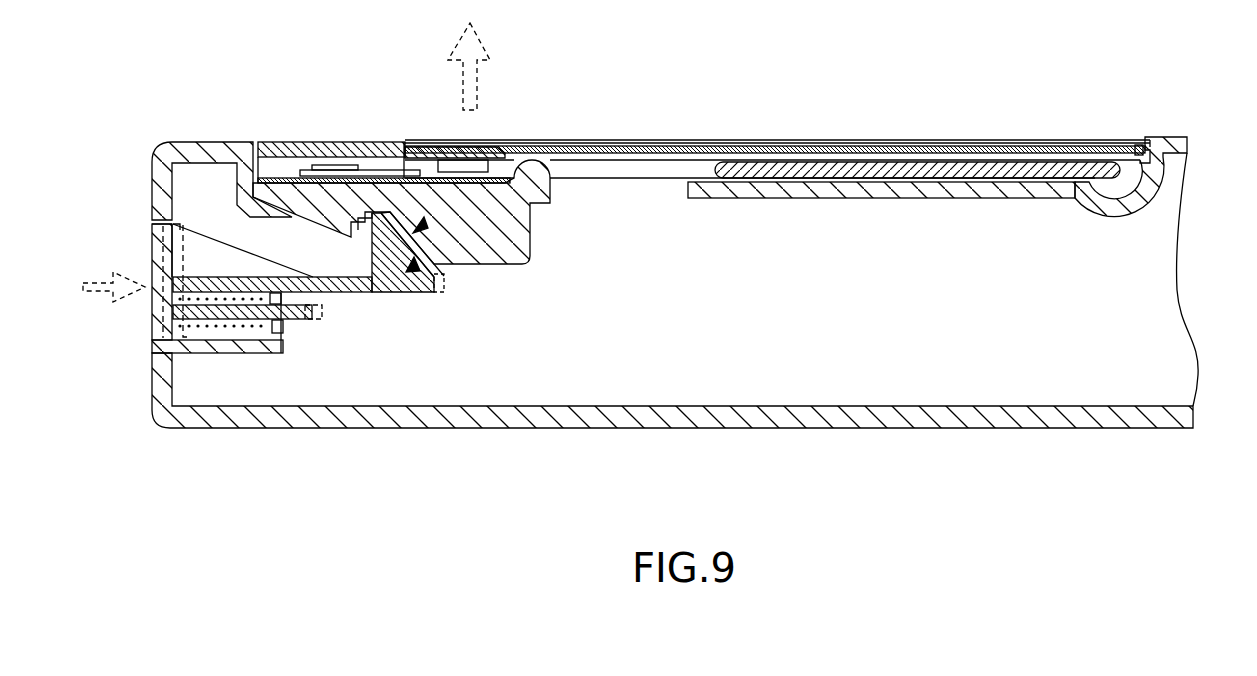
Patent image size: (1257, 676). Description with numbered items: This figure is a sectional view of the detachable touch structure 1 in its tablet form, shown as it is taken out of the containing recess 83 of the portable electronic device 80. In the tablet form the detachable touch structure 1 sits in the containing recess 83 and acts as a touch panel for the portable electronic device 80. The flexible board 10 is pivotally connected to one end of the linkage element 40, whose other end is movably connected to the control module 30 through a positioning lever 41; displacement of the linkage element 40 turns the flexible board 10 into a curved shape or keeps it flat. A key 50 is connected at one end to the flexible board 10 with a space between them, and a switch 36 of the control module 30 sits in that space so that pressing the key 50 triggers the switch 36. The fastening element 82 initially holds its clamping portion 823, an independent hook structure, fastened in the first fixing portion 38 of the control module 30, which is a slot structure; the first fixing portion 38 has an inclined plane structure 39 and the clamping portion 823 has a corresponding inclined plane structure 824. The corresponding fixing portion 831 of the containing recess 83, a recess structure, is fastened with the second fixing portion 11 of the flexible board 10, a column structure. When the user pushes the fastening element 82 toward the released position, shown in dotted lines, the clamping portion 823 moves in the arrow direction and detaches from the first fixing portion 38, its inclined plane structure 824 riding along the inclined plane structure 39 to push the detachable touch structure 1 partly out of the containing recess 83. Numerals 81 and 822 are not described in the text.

The detachable touch structure 1 is at (961, 80).
The flexible board 10 is at (947, 178).
The second fixing portion 11 is at (1141, 145).
The control module 30 is at (484, 250).
The switch 36 is at (333, 170).
The first fixing portion 38 is at (375, 212).
The inclined plane structure 39 is at (425, 170).
The linkage element 40 is at (905, 199).
The positioning lever 41 is at (599, 163).
The key 50 is at (290, 145).
The portable electronic device 80 is at (170, 108).
The side wall 81 is at (228, 152).
The fastening element 82 is at (158, 318).
The spring 822 is at (248, 330).
The clamping portion 823 is at (386, 280).
The corresponding inclined plane structure 824 is at (419, 290).
The containing recess 83 is at (601, 398).
The corresponding fixing portion 831 is at (1150, 158).